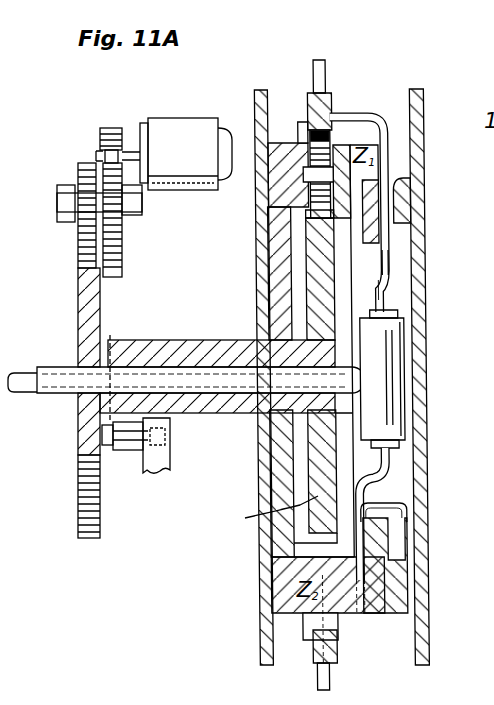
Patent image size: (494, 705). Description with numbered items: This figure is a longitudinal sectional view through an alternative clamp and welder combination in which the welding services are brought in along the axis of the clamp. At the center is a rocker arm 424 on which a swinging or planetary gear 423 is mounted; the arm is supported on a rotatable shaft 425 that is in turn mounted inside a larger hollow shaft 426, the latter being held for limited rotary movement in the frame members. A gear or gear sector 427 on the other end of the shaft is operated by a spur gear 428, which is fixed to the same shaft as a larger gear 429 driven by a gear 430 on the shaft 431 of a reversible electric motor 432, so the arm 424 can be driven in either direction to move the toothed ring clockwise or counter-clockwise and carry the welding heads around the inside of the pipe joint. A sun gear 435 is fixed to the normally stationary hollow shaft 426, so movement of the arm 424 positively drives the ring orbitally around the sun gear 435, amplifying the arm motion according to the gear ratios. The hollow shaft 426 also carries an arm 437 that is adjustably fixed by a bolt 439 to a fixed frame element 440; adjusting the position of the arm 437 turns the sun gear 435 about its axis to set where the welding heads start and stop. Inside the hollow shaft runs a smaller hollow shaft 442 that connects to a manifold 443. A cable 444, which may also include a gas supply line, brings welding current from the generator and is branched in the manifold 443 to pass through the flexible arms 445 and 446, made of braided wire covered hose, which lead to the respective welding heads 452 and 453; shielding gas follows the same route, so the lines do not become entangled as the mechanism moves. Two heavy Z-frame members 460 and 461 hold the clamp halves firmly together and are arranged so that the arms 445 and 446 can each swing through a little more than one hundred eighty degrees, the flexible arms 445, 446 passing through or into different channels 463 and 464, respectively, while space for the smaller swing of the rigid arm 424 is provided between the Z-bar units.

The planetary gear 423 is at (303, 142).
The rocker arm 424 is at (384, 278).
The rotatable shaft 425 is at (110, 345).
The hollow shaft 426 is at (232, 325).
The gear sector 427 is at (98, 302).
The spur gear 428 is at (78, 172).
The larger gear 429 is at (123, 242).
The gear 430 is at (100, 138).
The motor shaft 431 is at (127, 150).
The reversible electric motor 432 is at (185, 193).
The sun gear 435 is at (260, 514).
The arm 437 is at (133, 455).
The bolt 439 is at (160, 441).
The fixed frame element 440 is at (185, 450).
The smaller hollow shaft 442 is at (60, 368).
The manifold 443 is at (403, 380).
The cable 444 is at (20, 392).
The flexible arm 445 is at (388, 180).
The flexible arm 446 is at (386, 480).
The welding head 452 is at (331, 78).
The welding head 453 is at (325, 683).
The Z-frame member 460 is at (386, 262).
The Z-frame member 461 is at (392, 612).
The channel 463 is at (402, 196).
The channel 464 is at (364, 506).